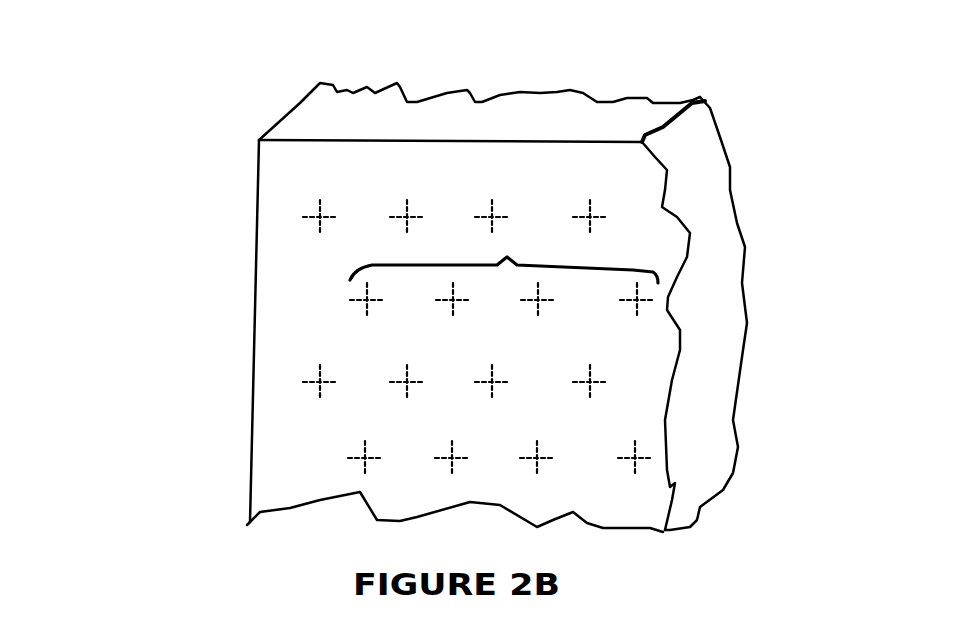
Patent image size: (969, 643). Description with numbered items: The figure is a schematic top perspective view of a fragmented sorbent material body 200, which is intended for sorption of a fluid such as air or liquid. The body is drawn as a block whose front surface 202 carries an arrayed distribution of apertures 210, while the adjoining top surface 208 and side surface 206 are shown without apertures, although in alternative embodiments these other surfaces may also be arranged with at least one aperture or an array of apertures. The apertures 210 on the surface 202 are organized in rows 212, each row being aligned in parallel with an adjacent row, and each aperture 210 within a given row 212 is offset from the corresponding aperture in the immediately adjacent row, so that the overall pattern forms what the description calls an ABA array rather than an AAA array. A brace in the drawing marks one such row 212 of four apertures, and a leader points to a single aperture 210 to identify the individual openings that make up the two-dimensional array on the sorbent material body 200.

The sorbent material body 200 is at (182, 240).
The surface 202 is at (278, 452).
The surface 206 is at (716, 338).
The surface 208 is at (523, 116).
The aperture 210 is at (590, 208).
The row 212 is at (525, 253).